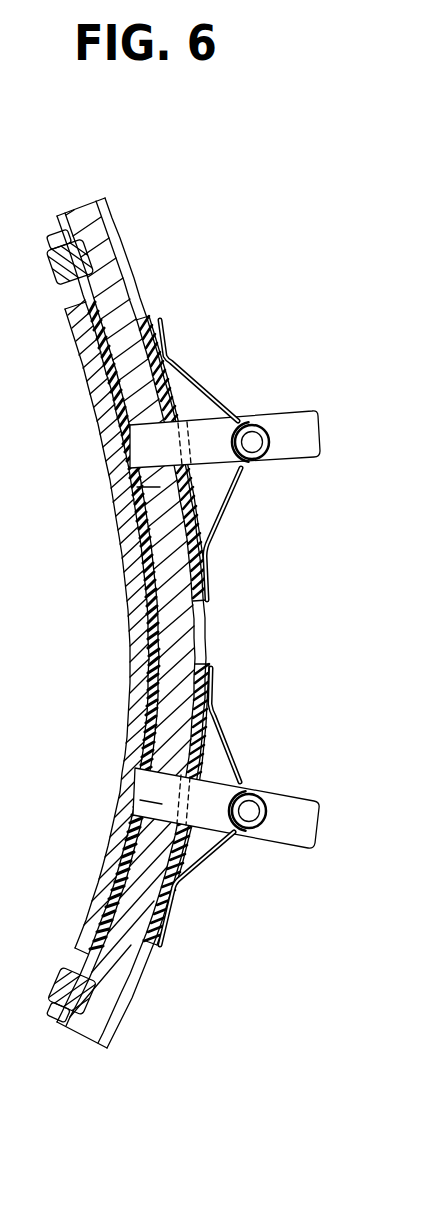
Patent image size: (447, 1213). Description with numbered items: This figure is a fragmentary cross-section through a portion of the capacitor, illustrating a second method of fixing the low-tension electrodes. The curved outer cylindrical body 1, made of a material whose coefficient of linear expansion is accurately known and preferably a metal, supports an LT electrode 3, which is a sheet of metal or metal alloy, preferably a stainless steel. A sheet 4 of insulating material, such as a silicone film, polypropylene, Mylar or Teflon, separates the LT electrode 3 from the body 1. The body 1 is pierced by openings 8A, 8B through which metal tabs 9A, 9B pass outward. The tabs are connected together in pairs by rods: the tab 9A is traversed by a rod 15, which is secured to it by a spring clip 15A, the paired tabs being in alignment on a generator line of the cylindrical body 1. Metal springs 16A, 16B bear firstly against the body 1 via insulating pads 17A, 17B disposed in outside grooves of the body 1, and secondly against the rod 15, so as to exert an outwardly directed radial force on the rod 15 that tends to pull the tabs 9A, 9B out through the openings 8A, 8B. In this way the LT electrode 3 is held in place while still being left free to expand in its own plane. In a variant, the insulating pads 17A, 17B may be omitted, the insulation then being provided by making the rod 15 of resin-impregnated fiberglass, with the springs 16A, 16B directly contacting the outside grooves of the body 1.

The outer cylindrical body 1 is at (183, 631).
The LT electrode 3 is at (92, 353).
The sheet of insulating material 4 is at (114, 396).
The opening 8A is at (126, 498).
The opening 8B is at (135, 752).
The metal tab 9A is at (307, 415).
The metal tab 9B is at (284, 799).
The rod 15 is at (251, 445).
The spring clip 15A is at (279, 447).
The metal spring 16A is at (218, 392).
The metal spring 16B is at (227, 742).
The insulating pad 17A is at (165, 320).
The insulating pad 17B is at (207, 666).